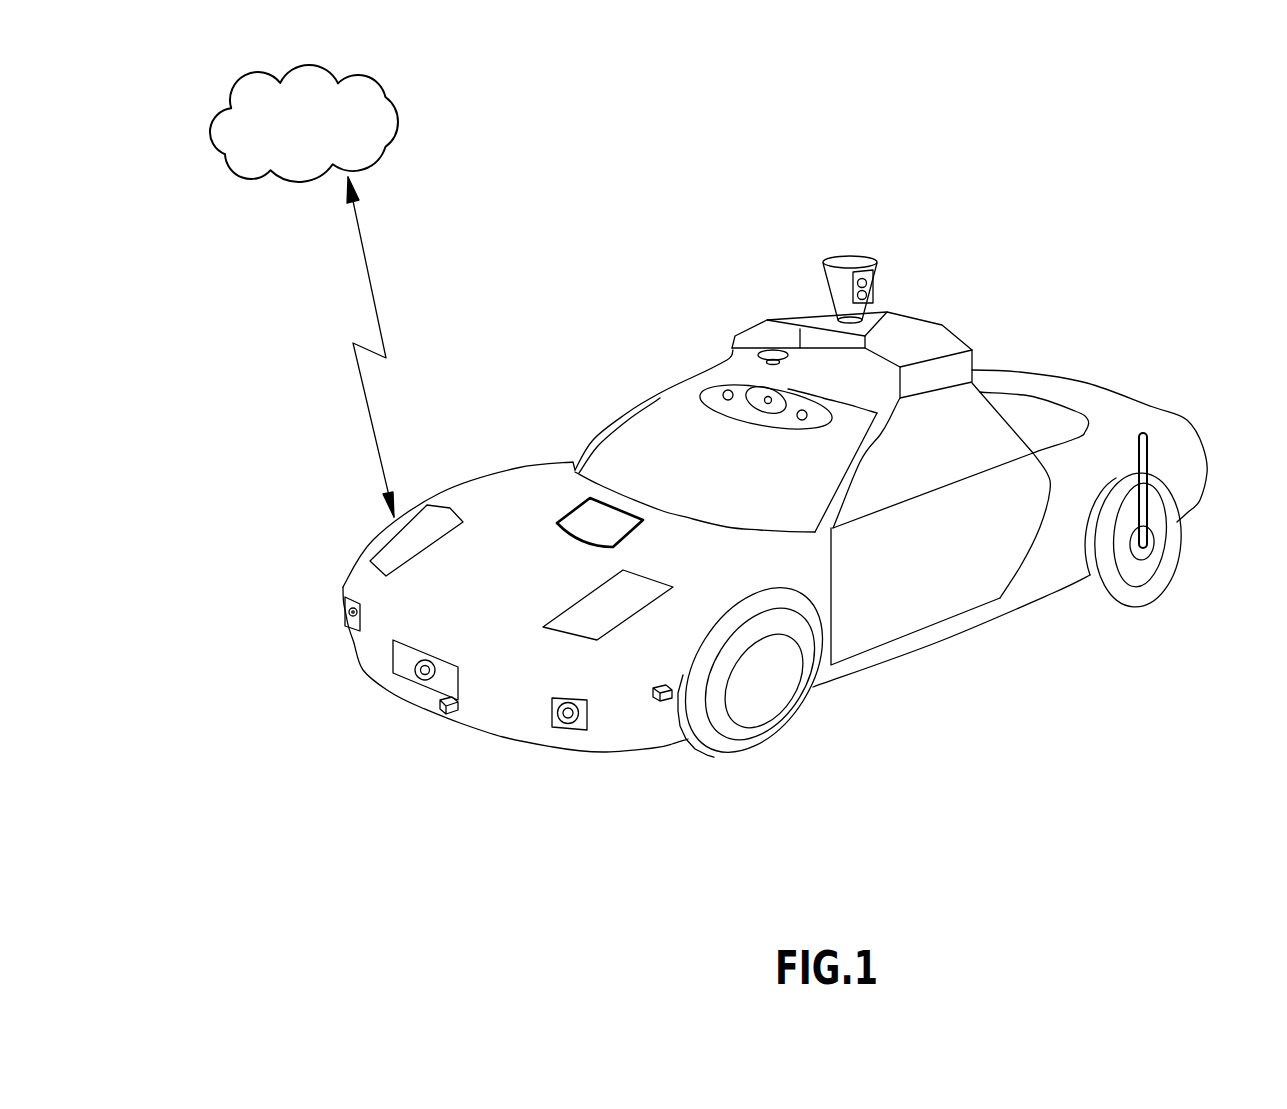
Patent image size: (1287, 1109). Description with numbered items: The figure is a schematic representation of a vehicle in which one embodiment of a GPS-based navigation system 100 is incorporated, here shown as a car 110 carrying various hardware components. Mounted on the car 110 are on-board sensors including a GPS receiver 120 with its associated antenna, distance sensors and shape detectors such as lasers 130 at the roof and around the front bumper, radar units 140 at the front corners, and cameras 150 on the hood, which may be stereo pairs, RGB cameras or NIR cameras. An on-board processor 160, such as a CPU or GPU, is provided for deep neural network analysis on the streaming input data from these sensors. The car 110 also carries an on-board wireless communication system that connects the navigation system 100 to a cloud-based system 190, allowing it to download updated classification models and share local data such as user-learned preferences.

The navigation system 100 is at (1120, 135).
The car 110 is at (1008, 360).
The GPS receiver 120 is at (770, 353).
The laser 130 is at (885, 224).
The radar unit 140 is at (463, 748).
The cameras 150 is at (802, 413).
The on-board processor 160 is at (1197, 368).
The cloud-based system 190 is at (403, 115).